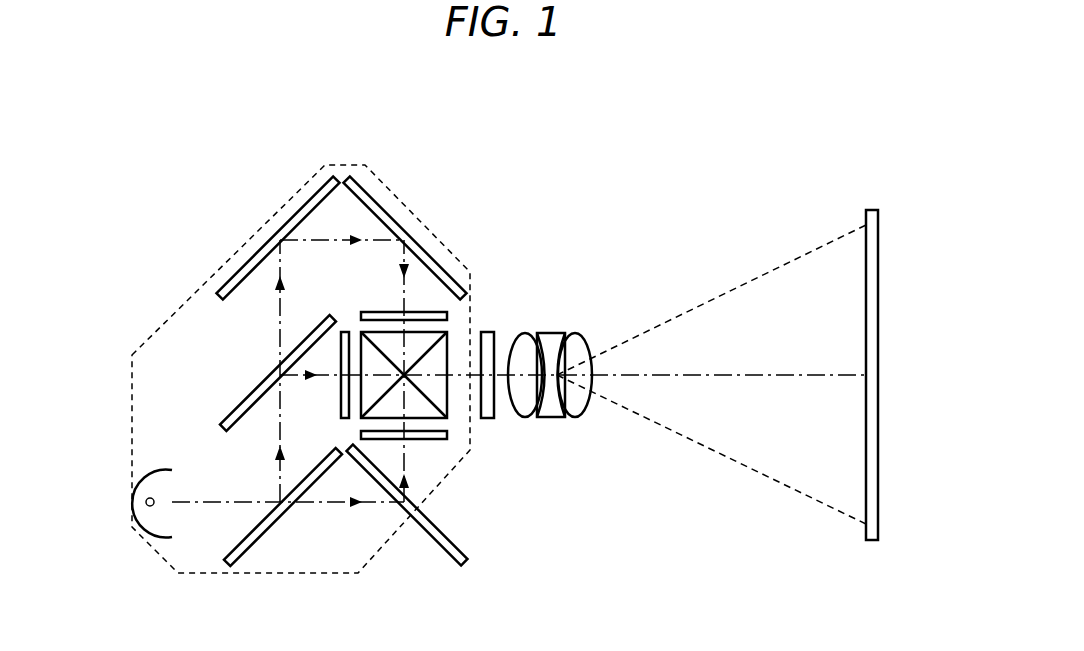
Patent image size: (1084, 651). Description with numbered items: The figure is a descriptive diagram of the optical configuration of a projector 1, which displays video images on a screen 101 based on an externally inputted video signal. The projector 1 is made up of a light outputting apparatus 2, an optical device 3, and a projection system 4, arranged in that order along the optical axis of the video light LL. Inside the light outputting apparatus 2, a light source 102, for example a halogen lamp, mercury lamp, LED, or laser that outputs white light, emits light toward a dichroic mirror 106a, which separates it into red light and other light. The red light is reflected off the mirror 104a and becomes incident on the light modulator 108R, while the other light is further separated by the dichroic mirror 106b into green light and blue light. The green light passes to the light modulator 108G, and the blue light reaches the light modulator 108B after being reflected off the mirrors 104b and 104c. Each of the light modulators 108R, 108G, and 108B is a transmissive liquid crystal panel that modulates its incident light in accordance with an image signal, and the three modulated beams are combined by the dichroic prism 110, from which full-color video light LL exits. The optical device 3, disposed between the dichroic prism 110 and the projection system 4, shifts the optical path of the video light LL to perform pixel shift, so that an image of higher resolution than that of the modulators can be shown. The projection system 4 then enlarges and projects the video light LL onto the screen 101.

The projector 1 is at (750, 158).
The light outputting apparatus 2 is at (188, 295).
The optical device 3 is at (495, 408).
The projection system 4 is at (590, 425).
The screen 101 is at (872, 541).
The light source 102 is at (156, 532).
The mirror 104a is at (380, 542).
The mirror 104b is at (296, 216).
The mirror 104c is at (388, 210).
The dichroic mirror 106a is at (252, 545).
The dichroic mirror 106b is at (239, 406).
The light modulator 108B is at (450, 318).
The light modulator 108G is at (337, 390).
The light modulator 108R is at (383, 440).
The dichroic prism 110 is at (448, 338).
The video light LL is at (463, 378).